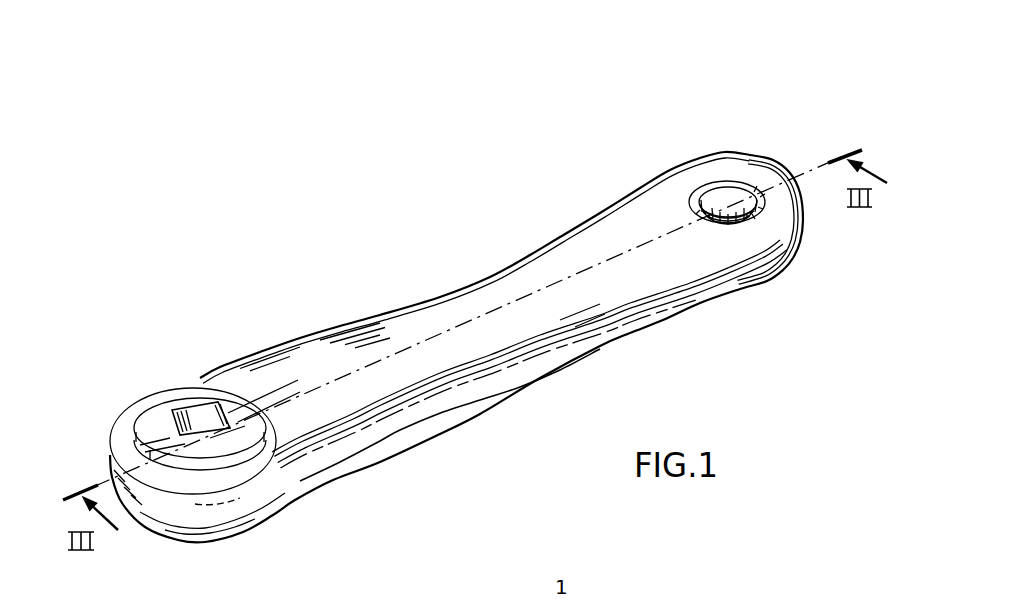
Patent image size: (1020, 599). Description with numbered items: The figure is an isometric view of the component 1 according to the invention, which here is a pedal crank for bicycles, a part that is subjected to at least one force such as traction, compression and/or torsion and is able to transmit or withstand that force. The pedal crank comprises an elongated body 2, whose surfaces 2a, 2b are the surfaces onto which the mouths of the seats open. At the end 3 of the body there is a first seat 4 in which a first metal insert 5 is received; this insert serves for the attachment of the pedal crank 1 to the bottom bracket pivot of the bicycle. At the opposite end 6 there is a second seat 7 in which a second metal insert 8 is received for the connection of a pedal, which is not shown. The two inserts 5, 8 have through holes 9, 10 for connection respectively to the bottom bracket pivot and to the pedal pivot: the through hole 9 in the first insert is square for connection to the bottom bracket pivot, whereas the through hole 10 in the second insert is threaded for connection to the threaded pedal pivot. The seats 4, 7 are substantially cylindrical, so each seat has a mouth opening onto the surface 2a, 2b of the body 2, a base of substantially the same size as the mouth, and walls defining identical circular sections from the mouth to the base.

The component 1 is at (226, 181).
The elongated body 2 is at (478, 295).
The surface of the body 2a is at (377, 332).
The surface of the body 2b is at (412, 464).
The end 3 is at (94, 327).
The first seat 4 is at (176, 486).
The first metal insert 5 is at (161, 408).
The opposite end 6 is at (759, 84).
The second seat 7 is at (766, 212).
The second metal insert 8 is at (760, 187).
The through hole 9 is at (201, 407).
The through hole 10 is at (718, 193).